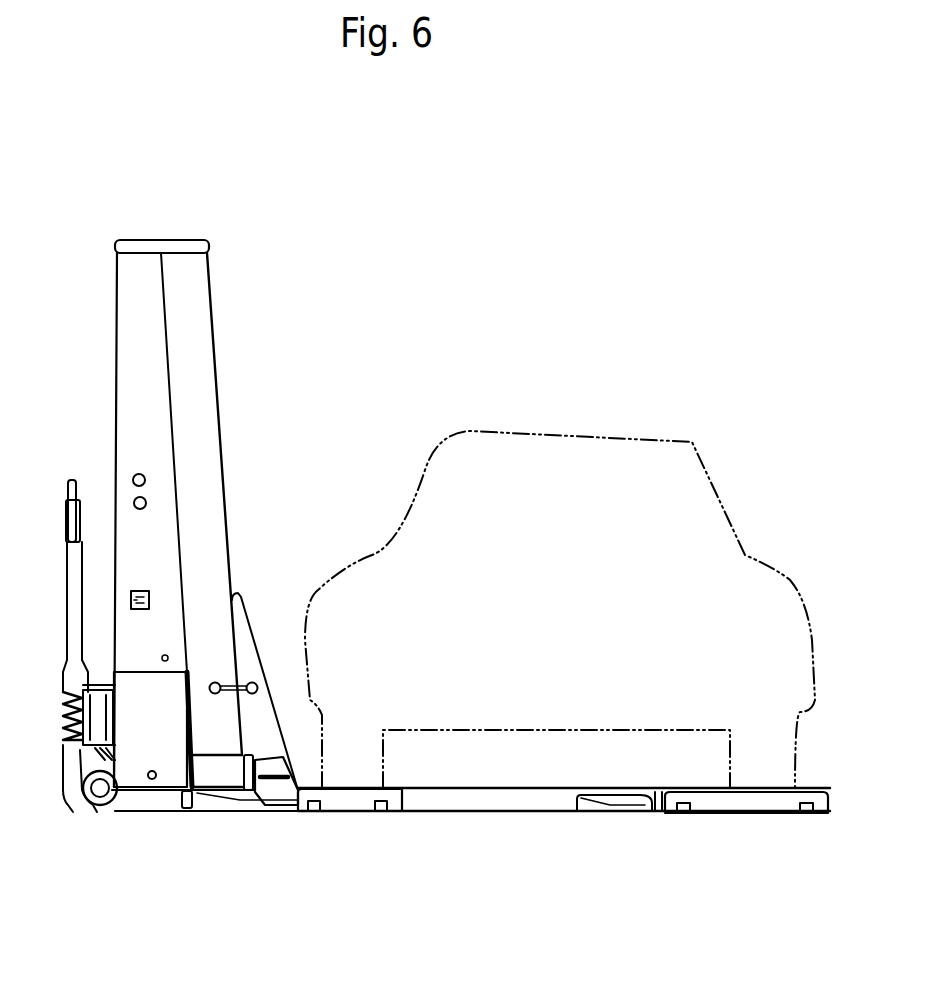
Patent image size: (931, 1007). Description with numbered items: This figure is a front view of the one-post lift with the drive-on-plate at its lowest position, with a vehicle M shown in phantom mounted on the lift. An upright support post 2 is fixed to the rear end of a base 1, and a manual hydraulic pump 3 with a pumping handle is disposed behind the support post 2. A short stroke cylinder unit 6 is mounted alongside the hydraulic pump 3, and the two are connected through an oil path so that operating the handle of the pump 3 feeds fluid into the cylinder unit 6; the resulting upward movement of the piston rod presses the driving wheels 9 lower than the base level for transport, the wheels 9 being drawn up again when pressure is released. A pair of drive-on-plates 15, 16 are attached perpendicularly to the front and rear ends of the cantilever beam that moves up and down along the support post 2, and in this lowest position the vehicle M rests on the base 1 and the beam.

The base 1 is at (507, 805).
The support post 2 is at (212, 330).
The manual hydraulic pump 3 is at (73, 810).
The short stroke cylinder unit 6 is at (100, 713).
The driving wheels 9 is at (97, 812).
The drive-on-plate 15 is at (742, 822).
The drive-on-plate 16 is at (340, 823).
The vehicle M is at (608, 458).